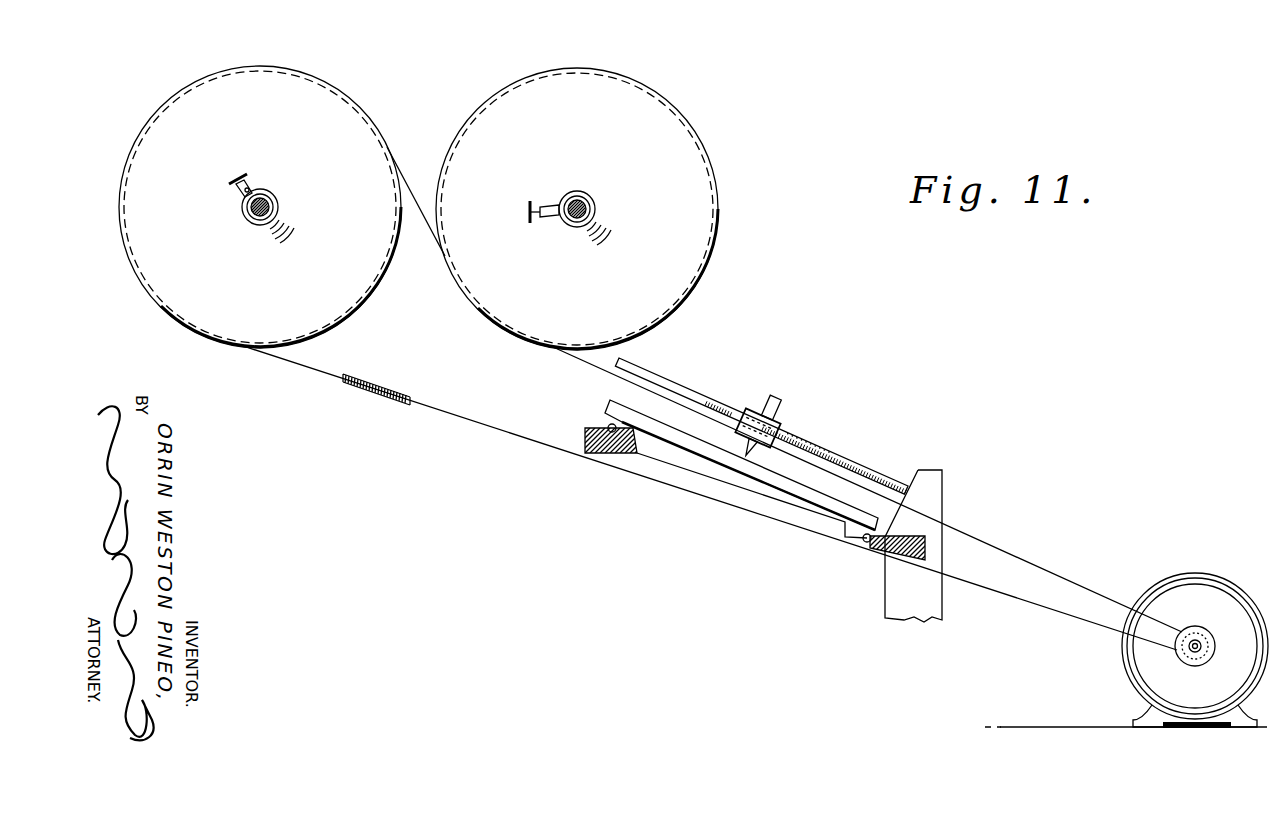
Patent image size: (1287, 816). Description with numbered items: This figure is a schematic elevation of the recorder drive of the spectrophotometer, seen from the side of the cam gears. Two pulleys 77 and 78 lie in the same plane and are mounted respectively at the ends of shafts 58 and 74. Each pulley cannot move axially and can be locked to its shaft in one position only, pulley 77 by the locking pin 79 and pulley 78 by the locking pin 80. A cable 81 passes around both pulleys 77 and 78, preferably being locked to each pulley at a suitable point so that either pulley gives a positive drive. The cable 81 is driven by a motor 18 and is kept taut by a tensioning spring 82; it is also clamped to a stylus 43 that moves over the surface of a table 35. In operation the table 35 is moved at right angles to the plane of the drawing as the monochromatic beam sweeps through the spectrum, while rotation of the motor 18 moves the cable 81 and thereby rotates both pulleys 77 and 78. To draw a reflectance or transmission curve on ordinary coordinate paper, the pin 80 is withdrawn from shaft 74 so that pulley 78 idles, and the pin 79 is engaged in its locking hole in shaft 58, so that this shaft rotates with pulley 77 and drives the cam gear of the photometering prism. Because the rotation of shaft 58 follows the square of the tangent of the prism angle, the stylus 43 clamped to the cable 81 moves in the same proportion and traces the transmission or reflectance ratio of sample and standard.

The motor 18 is at (1198, 576).
The table 35 is at (610, 401).
The stylus 43 is at (782, 402).
The shaft 58 is at (268, 200).
The shaft 74 is at (589, 205).
The pulley 77 is at (389, 146).
The pulley 78 is at (706, 146).
The locking pin 79 is at (237, 185).
The locking pin 80 is at (548, 222).
The cable 81 is at (541, 446).
The tensioning spring 82 is at (377, 394).